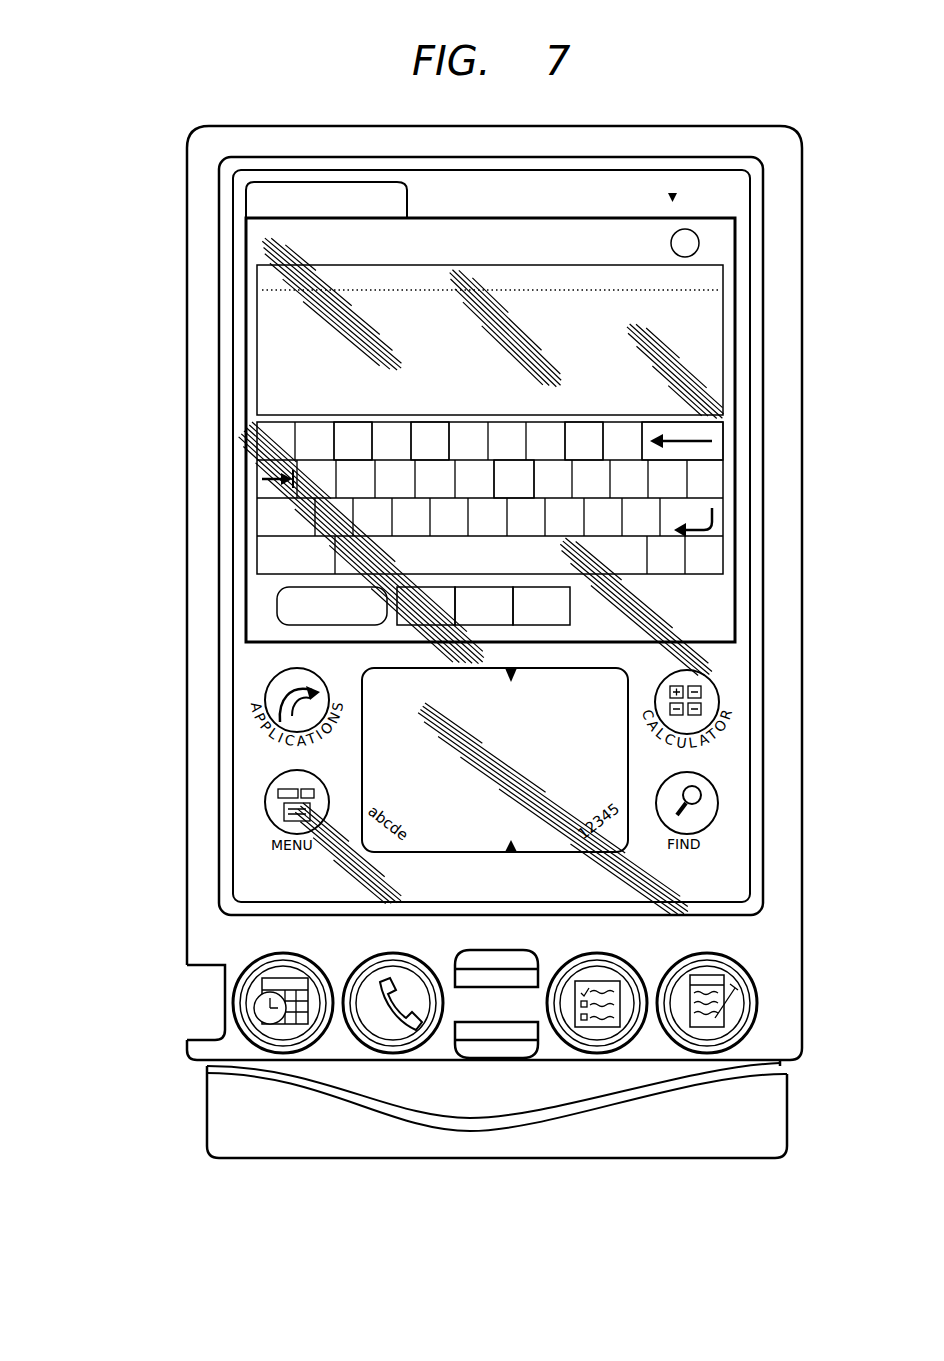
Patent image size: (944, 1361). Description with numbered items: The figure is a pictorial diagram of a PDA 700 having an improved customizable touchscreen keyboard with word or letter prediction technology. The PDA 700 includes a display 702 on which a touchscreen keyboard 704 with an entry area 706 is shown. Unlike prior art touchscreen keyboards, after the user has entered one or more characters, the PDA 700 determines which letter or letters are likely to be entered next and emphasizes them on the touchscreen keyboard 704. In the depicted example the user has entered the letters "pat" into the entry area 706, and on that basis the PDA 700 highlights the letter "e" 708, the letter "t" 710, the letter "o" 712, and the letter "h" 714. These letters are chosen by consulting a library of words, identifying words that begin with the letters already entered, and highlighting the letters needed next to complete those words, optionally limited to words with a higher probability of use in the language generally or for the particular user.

The PDA 700 is at (97, 57).
The display 702 is at (712, 318).
The touchscreen keyboard 704 is at (683, 422).
The entry area 706 is at (290, 290).
The letter "e" 708 is at (355, 424).
The letter "t" 710 is at (430, 424).
The letter "o" 712 is at (582, 424).
The letter "h" 714 is at (520, 463).